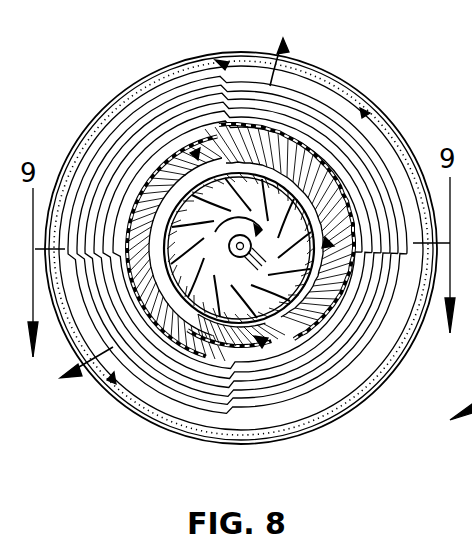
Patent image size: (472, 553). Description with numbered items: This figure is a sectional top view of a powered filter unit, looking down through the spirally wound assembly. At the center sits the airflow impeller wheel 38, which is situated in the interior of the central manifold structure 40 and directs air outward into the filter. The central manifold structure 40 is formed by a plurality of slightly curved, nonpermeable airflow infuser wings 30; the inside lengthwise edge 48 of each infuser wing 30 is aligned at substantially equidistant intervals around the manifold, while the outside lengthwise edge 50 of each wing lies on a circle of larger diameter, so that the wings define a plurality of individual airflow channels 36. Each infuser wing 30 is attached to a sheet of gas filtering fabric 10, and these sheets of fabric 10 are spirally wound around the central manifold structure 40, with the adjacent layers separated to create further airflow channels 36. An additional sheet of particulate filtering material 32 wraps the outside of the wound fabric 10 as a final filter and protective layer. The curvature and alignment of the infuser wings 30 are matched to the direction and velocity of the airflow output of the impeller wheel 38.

The gas filtering fabric 10 is at (232, 168).
The airflow infuser wing 30 is at (293, 217).
The sheet of particulate filtering material 32 is at (352, 400).
The airflow channels 36 is at (197, 340).
The airflow impeller wheel 38 is at (325, 140).
The central manifold structure 40 is at (350, 180).
The inside lengthwise edge 48 is at (262, 150).
The outside lengthwise edge 50 is at (220, 190).